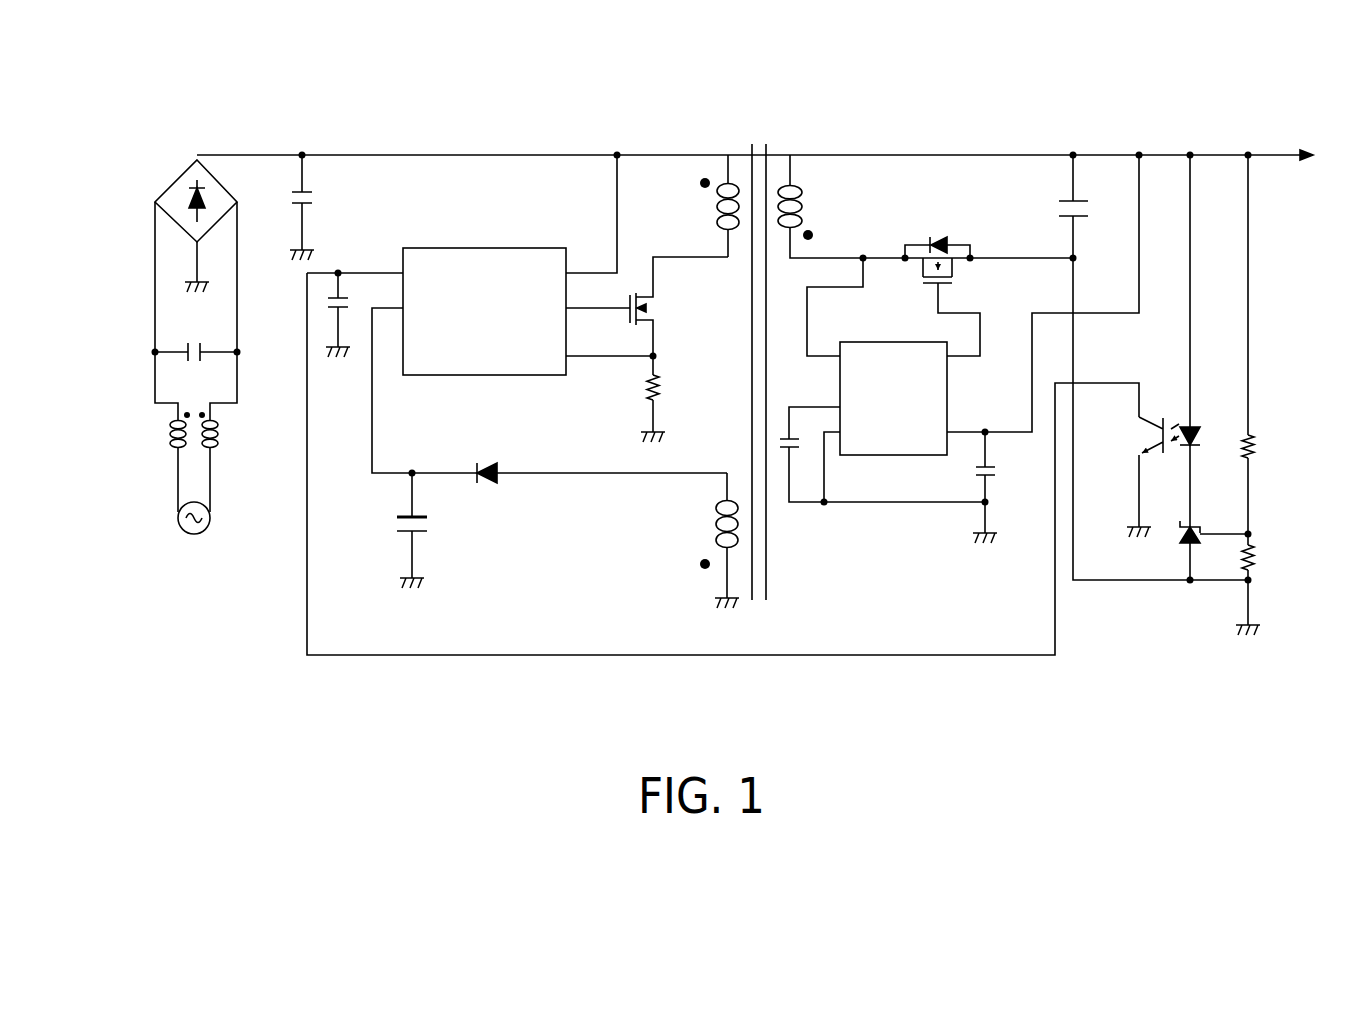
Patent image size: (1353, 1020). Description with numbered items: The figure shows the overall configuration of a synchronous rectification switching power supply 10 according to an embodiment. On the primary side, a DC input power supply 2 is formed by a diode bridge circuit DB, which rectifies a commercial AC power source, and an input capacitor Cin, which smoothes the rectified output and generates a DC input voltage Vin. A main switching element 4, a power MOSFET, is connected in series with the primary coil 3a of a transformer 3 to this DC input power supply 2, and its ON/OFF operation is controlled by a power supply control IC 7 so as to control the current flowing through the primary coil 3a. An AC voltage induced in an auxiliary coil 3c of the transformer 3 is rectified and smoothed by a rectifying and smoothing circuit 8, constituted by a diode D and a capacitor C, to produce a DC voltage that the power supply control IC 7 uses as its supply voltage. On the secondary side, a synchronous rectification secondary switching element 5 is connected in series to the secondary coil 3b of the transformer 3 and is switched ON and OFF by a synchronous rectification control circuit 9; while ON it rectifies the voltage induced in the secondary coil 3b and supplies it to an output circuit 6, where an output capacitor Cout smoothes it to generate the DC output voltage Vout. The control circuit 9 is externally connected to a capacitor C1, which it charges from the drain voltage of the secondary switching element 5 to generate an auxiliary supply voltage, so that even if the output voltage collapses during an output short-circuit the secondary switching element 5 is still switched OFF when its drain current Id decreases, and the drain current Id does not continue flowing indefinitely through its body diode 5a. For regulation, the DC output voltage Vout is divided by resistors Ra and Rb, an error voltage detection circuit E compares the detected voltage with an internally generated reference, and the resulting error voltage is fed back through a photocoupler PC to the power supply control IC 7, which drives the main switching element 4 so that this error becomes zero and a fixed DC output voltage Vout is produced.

The DC input power supply 2 is at (205, 301).
The diode bridge circuit DB is at (182, 188).
The input capacitor Cin is at (315, 199).
The DC input voltage Vin is at (298, 143).
The power supply control IC 7 is at (524, 255).
The main switching element 4 is at (653, 318).
The transformer 3 is at (862, 338).
The primary coil 3a is at (711, 210).
The secondary coil 3b is at (802, 205).
The auxiliary coil 3c is at (713, 530).
The rectifying and smoothing circuit 8 is at (549, 448).
The diode D is at (483, 465).
The capacitor C is at (405, 517).
The switching power supply 10 is at (897, 283).
The secondary switching element 5 is at (948, 269).
The body diode 5a is at (942, 236).
The drain current Id is at (952, 222).
The synchronous rectification control circuit 9 is at (942, 390).
The capacitor C1 is at (800, 445).
The output circuit 6 is at (1101, 163).
The output capacitor Cout is at (1092, 210).
The DC output voltage Vout is at (1212, 155).
The photocoupler PC is at (1175, 420).
The error voltage detection circuit E is at (1203, 520).
The resistor Ra is at (1263, 447).
The resistor Rb is at (1263, 557).